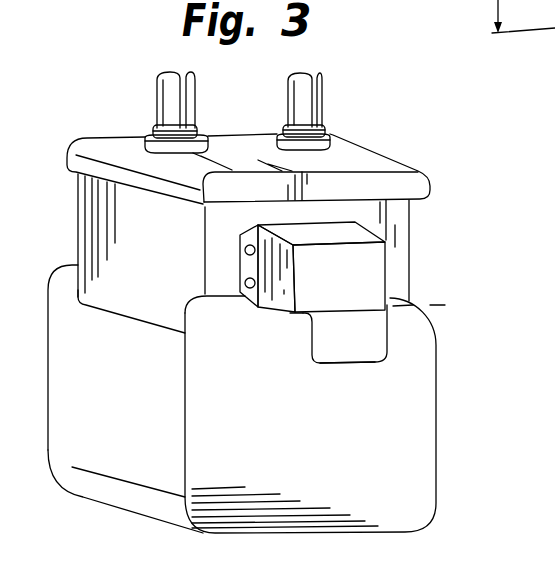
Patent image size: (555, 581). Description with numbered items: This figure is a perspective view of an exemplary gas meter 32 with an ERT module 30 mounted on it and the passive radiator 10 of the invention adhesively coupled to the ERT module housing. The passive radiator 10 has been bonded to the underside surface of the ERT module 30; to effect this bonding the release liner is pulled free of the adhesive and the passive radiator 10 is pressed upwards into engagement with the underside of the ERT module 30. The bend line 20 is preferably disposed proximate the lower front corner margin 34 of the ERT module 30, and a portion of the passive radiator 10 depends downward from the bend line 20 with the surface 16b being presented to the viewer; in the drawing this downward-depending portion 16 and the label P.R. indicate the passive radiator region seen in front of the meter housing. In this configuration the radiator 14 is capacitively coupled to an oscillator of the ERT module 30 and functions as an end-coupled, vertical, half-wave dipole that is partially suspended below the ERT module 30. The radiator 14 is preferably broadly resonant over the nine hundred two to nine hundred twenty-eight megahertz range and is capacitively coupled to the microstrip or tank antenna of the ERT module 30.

The passive radiator 10 is at (404, 322).
The recess in battery housing 16 is at (380, 321).
The surface 16b is at (362, 352).
The bend line 20 is at (462, 302).
The ERT module 30 is at (270, 273).
The gas meter 32 is at (131, 156).
The lower front corner margin 34 is at (353, 312).
The P.R. indication P.R. is at (366, 382).
The radiator 14 is at (523, 39).